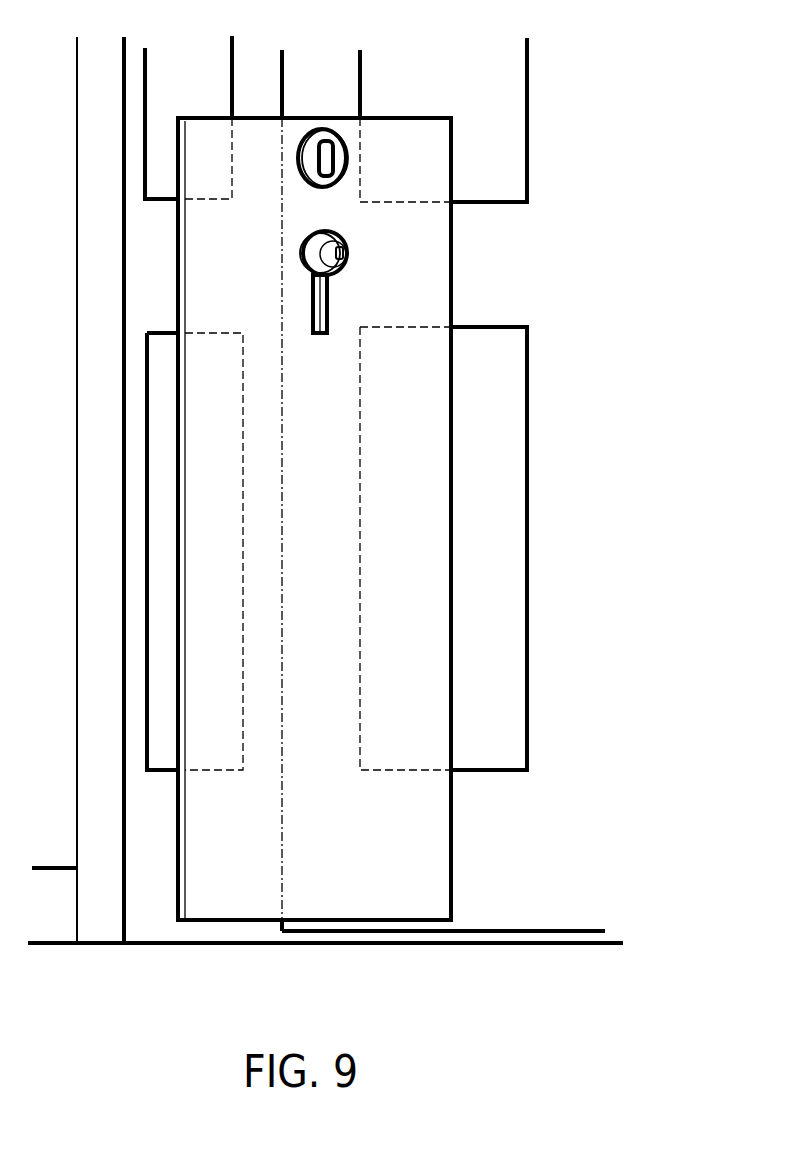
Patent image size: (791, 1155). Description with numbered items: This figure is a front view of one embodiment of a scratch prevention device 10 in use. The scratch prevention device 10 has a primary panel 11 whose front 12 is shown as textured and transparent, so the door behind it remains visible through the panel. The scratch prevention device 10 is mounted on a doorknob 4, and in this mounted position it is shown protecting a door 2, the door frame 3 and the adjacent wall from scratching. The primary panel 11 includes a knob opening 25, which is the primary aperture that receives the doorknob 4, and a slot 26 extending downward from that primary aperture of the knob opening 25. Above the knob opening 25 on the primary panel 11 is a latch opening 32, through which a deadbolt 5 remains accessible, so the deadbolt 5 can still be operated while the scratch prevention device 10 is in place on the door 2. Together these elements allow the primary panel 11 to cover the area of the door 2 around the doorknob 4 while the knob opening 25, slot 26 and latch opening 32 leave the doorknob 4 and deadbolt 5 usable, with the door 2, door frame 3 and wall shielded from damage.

The door 2 is at (565, 143).
The door frame 3 is at (258, 62).
The doorknob 4 is at (345, 251).
The deadbolt 5 is at (348, 155).
The scratch prevention device 10 is at (340, 485).
The primary panel 11 is at (397, 524).
The front 12 is at (405, 740).
The knob opening 25 is at (345, 262).
The slot 26 is at (328, 310).
The latch opening 32 is at (350, 163).